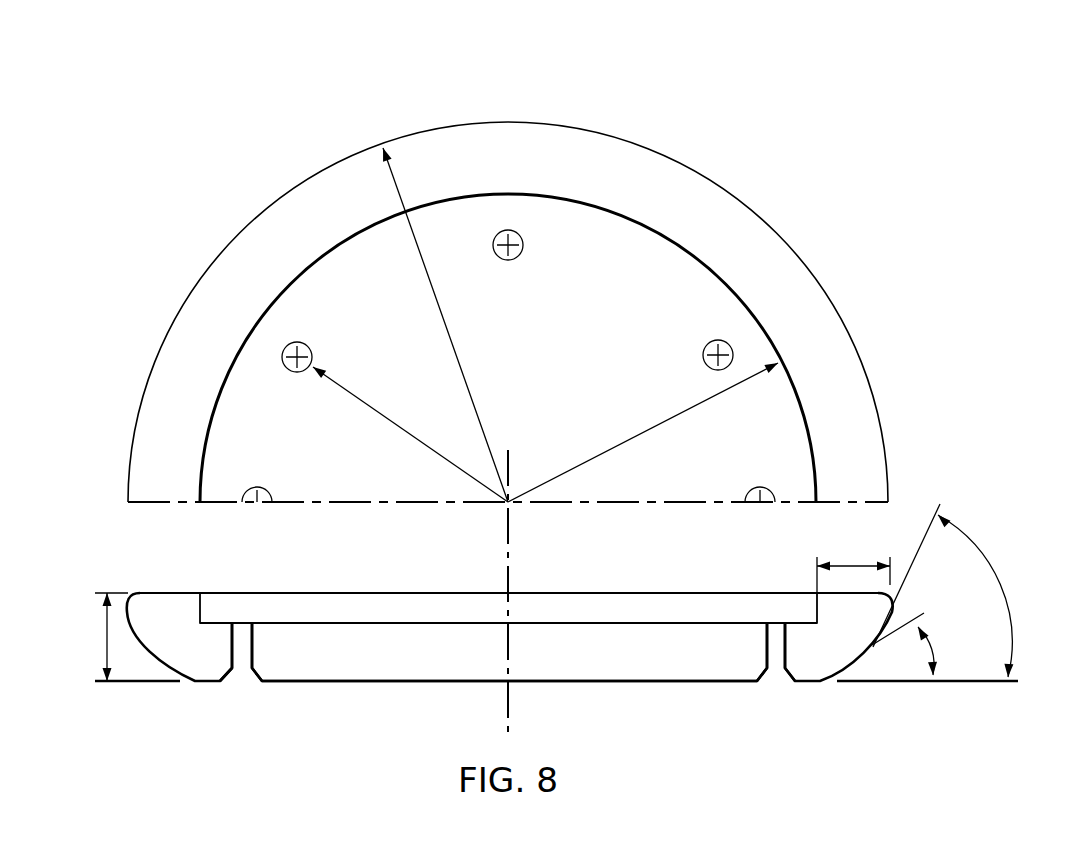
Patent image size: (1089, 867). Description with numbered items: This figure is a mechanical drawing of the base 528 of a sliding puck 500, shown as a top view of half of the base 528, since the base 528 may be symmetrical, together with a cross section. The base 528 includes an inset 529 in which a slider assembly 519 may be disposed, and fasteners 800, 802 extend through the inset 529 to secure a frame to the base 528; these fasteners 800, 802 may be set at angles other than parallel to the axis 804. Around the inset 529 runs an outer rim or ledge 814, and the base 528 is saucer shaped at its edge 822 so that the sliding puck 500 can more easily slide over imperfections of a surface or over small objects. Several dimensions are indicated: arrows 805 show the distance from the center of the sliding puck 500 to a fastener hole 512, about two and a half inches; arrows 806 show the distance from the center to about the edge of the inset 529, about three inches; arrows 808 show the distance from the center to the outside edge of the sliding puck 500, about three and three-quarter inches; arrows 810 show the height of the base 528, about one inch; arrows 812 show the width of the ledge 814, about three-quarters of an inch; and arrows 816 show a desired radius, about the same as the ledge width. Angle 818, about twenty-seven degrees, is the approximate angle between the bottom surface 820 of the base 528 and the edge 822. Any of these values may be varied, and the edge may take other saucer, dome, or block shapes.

The sliding puck 500 is at (677, 68).
The base 528 is at (341, 156).
The slider assembly 519 is at (528, 343).
The fastener hole 512 is at (311, 346).
The arrows 808 is at (443, 323).
The arrows 805 is at (407, 433).
The arrows 806 is at (647, 433).
The inset 529 is at (400, 574).
The ledge 814 is at (178, 592).
The arrows 812 is at (853, 563).
The edge 822 is at (910, 605).
The arrows 816 is at (1007, 582).
The angle 818 is at (935, 650).
The arrows 810 is at (105, 637).
The fastener 800 is at (240, 673).
The bottom surface 820 is at (417, 680).
The axis 804 is at (498, 686).
The fastener 802 is at (777, 670).